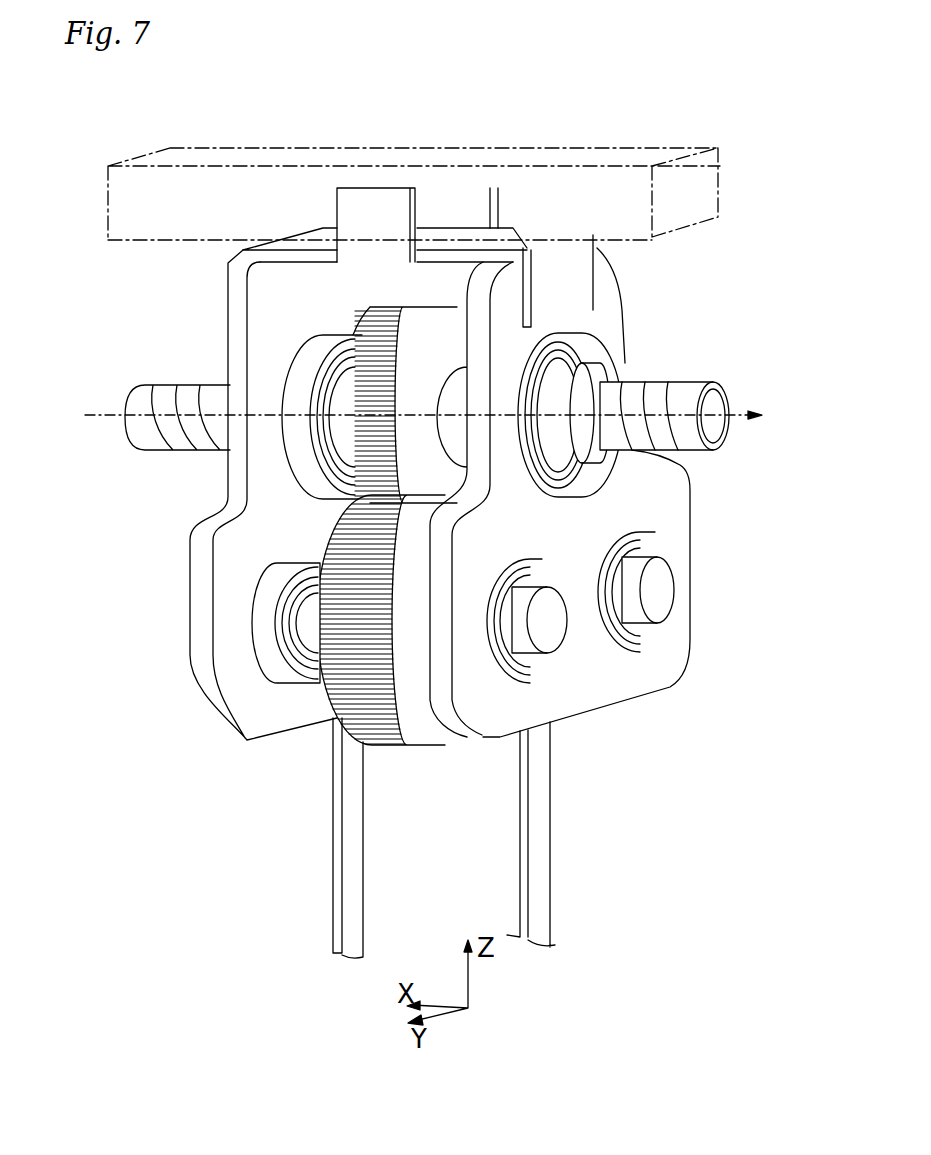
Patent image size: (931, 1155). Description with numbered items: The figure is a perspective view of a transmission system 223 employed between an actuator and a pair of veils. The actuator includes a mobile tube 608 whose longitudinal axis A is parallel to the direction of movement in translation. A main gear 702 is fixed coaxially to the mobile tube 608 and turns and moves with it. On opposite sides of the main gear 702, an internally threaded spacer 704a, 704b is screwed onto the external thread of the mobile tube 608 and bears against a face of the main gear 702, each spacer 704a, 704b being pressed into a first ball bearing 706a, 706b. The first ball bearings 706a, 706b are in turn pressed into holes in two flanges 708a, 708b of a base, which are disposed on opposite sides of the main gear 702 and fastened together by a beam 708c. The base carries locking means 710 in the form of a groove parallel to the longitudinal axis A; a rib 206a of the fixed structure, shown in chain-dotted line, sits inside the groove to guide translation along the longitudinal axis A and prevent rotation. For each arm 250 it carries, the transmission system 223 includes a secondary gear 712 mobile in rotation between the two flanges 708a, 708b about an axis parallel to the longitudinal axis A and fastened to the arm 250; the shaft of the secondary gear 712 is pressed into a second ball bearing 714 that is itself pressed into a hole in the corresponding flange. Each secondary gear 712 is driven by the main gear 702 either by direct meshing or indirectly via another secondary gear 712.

The rib 206a is at (633, 160).
The locking means 710 is at (350, 202).
The flange 708a is at (199, 541).
The flange 708b is at (667, 518).
The beam 708c is at (543, 260).
The first ball bearing 706a is at (325, 340).
The first ball bearing 706b is at (535, 328).
The spacer 704a is at (320, 397).
The spacer 704b is at (578, 334).
The main gear 702 is at (367, 403).
The mobile tube 608 is at (660, 390).
The secondary gear 712 is at (390, 742).
The second ball bearing 714 is at (630, 622).
The arm 250 is at (348, 914).
The transmission system 223 is at (150, 870).
The longitudinal axis A is at (441, 395).